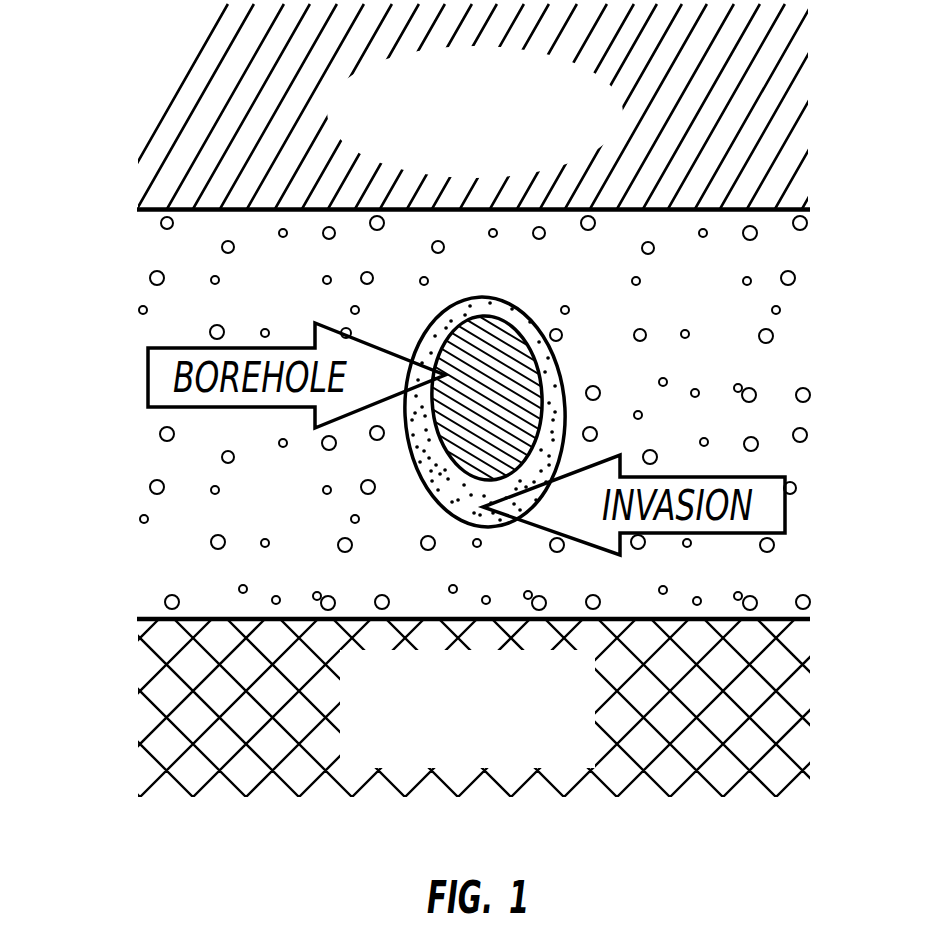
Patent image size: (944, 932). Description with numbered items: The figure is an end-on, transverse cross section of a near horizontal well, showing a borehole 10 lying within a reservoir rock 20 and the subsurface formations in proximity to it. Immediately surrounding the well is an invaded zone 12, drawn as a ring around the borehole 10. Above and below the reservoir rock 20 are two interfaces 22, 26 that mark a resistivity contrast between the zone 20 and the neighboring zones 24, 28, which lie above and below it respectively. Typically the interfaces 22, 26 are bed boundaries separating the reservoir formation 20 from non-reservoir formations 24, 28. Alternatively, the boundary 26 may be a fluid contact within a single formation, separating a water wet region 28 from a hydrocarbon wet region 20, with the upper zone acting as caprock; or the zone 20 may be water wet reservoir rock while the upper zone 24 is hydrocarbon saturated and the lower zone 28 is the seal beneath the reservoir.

The borehole 10 is at (503, 315).
The invaded zone 12 is at (553, 357).
The reservoir rock 20 is at (158, 297).
The interface 22 is at (140, 207).
The non-reservoir formation 24 is at (148, 106).
The interface 26 is at (155, 616).
The non-reservoir formation 28 is at (163, 752).